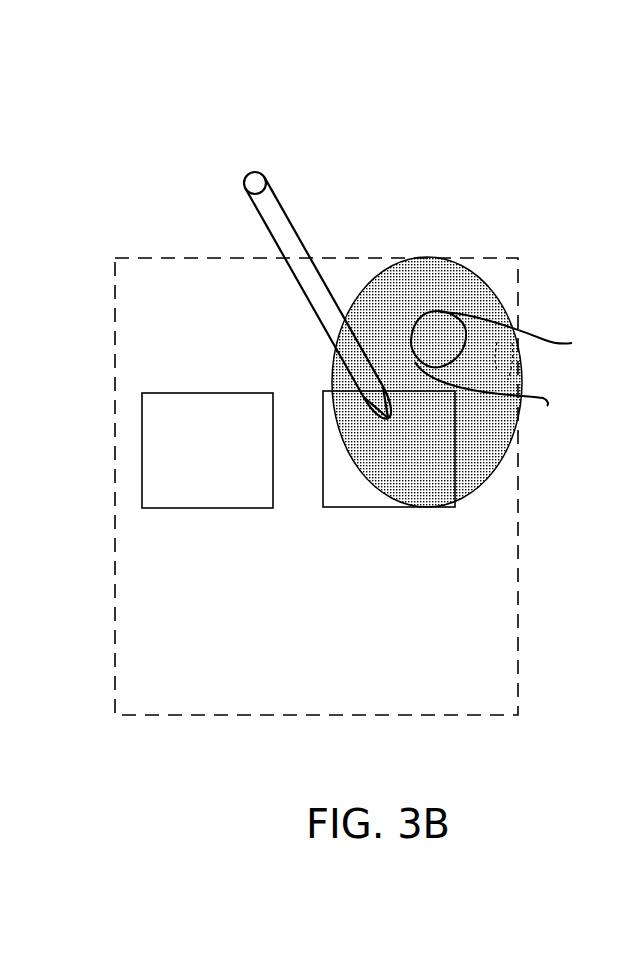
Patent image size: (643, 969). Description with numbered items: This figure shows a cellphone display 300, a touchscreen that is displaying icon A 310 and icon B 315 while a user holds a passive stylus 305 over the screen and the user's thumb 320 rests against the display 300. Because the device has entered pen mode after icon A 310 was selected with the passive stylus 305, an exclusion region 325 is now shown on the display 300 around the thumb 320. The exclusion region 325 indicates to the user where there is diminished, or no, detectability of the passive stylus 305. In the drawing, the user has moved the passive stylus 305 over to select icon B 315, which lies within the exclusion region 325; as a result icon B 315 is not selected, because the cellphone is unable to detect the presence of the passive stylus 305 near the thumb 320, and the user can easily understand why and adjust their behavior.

The display 300 is at (168, 763).
The passive stylus 305 is at (225, 202).
The icon A 310 is at (207, 450).
The icon B 315 is at (389, 449).
The thumb 320 is at (546, 417).
The exclusion region 325 is at (443, 257).